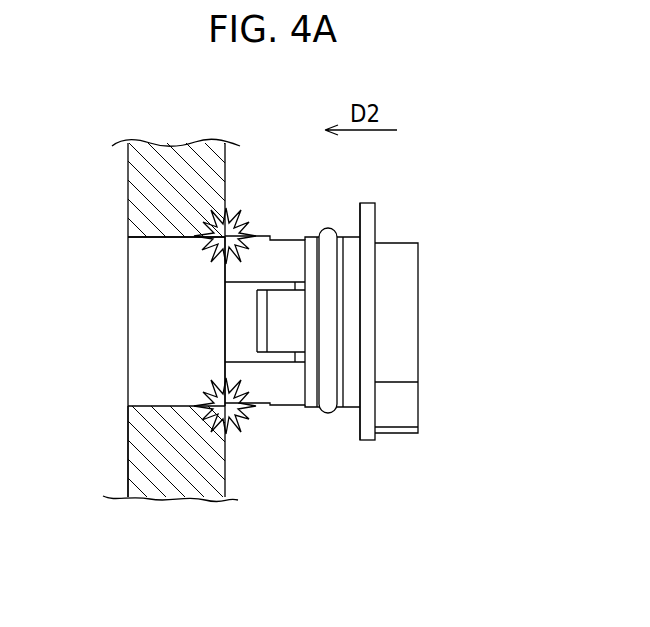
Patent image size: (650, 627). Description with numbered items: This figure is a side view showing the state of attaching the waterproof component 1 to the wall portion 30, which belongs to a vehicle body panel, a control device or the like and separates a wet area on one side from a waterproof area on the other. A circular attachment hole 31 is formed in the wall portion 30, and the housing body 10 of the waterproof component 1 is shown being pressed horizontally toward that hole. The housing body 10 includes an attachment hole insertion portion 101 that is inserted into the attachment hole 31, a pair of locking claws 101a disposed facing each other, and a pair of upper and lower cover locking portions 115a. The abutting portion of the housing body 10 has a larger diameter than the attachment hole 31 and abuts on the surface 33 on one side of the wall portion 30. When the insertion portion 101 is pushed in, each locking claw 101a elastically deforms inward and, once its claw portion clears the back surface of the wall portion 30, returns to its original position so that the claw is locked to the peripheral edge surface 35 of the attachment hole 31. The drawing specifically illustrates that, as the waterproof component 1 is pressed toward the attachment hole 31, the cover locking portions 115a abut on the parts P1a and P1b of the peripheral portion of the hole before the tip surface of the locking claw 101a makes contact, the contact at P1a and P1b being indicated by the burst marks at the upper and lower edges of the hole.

The waterproof component 1 is at (413, 213).
The housing body 10 is at (401, 447).
The wall portion 30 is at (134, 184).
The attachment hole 31 is at (138, 251).
The surface 33 is at (226, 485).
The peripheral edge surface 35 is at (128, 476).
The attachment hole insertion portion 101 is at (350, 398).
The locking claw 101a is at (280, 322).
The cover locking portion 115a is at (272, 262).
The part of the peripheral portion of the attachment hole P1a is at (243, 212).
The part of the peripheral portion of the attachment hole P1b is at (236, 425).